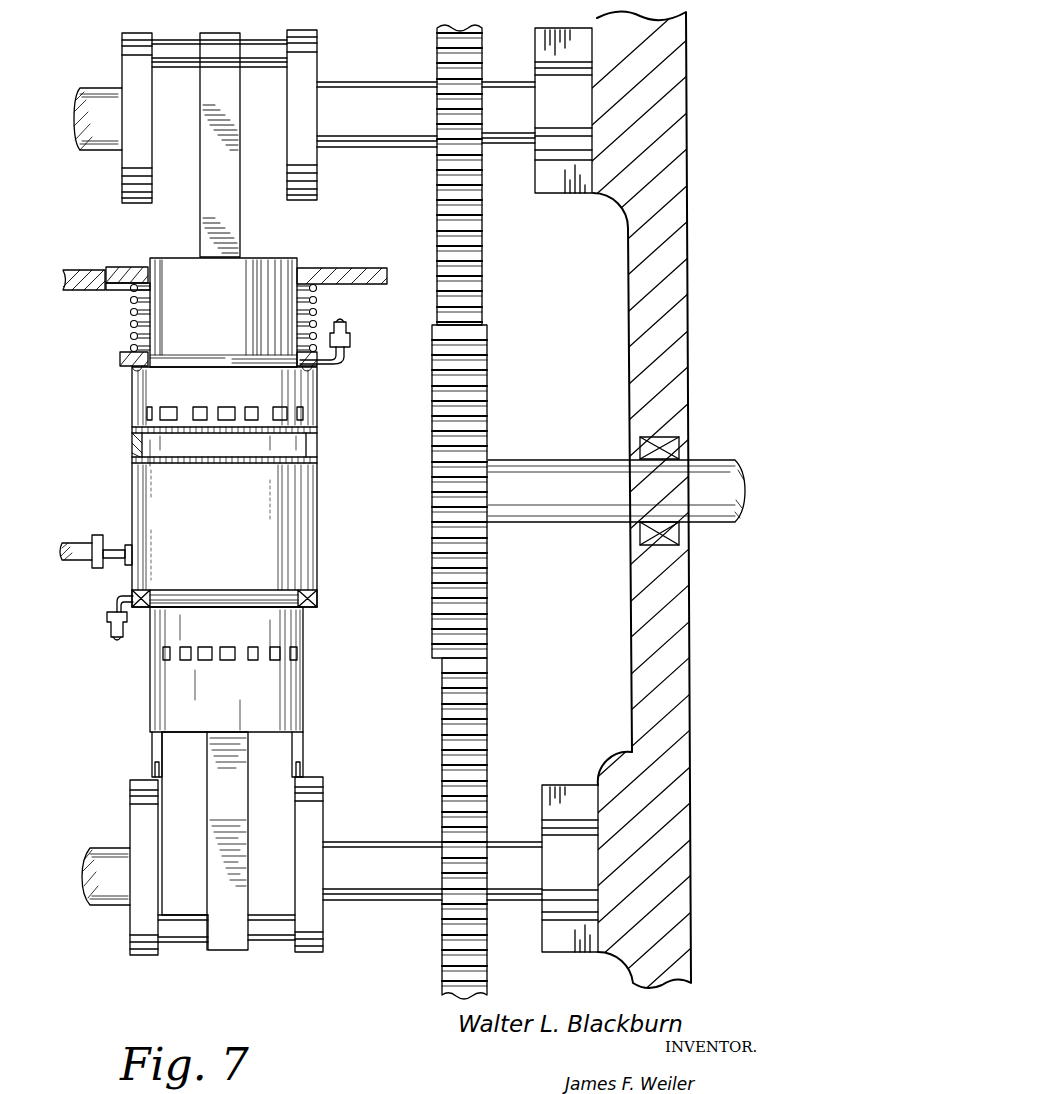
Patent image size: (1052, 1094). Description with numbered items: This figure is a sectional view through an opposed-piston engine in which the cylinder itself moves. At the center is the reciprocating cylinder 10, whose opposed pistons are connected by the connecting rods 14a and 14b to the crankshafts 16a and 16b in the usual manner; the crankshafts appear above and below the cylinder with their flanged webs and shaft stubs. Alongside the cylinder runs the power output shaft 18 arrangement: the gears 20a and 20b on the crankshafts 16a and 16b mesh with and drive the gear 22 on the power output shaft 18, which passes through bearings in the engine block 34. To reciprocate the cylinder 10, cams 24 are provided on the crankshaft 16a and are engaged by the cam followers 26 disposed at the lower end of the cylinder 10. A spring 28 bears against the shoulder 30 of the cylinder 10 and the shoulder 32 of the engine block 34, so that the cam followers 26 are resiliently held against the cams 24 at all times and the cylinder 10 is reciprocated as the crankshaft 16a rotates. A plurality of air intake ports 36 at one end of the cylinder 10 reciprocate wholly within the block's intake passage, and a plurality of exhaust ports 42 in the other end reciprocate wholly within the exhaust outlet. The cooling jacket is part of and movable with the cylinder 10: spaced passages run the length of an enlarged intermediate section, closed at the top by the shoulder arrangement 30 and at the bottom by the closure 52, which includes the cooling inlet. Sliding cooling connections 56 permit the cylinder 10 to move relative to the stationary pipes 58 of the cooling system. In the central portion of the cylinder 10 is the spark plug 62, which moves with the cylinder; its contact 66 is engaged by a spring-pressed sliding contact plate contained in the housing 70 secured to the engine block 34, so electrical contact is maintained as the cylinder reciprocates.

The reciprocating cylinder 10 is at (305, 623).
The connecting rod 14a is at (220, 805).
The connecting rod 14b is at (232, 222).
The crankshaft 16a is at (388, 846).
The crankshaft 16b is at (175, 40).
The power output shaft 18 is at (722, 460).
The gear 20a is at (444, 935).
The gear 20b is at (476, 262).
The gear 22 is at (435, 488).
The cam 24 is at (130, 933).
The cam follower 26 is at (152, 775).
The spring 28 is at (130, 311).
The shoulder 30 is at (120, 362).
The shoulder 32 is at (132, 265).
The engine block 34 is at (70, 270).
The air intake port 36 is at (305, 650).
The exhaust port 42 is at (300, 413).
The closure 52 is at (320, 596).
The sliding cooling connection 56 is at (352, 351).
The pipe 58 is at (352, 330).
The spark plug 62 is at (120, 570).
The contact 66 is at (106, 535).
The housing 70 is at (66, 540).